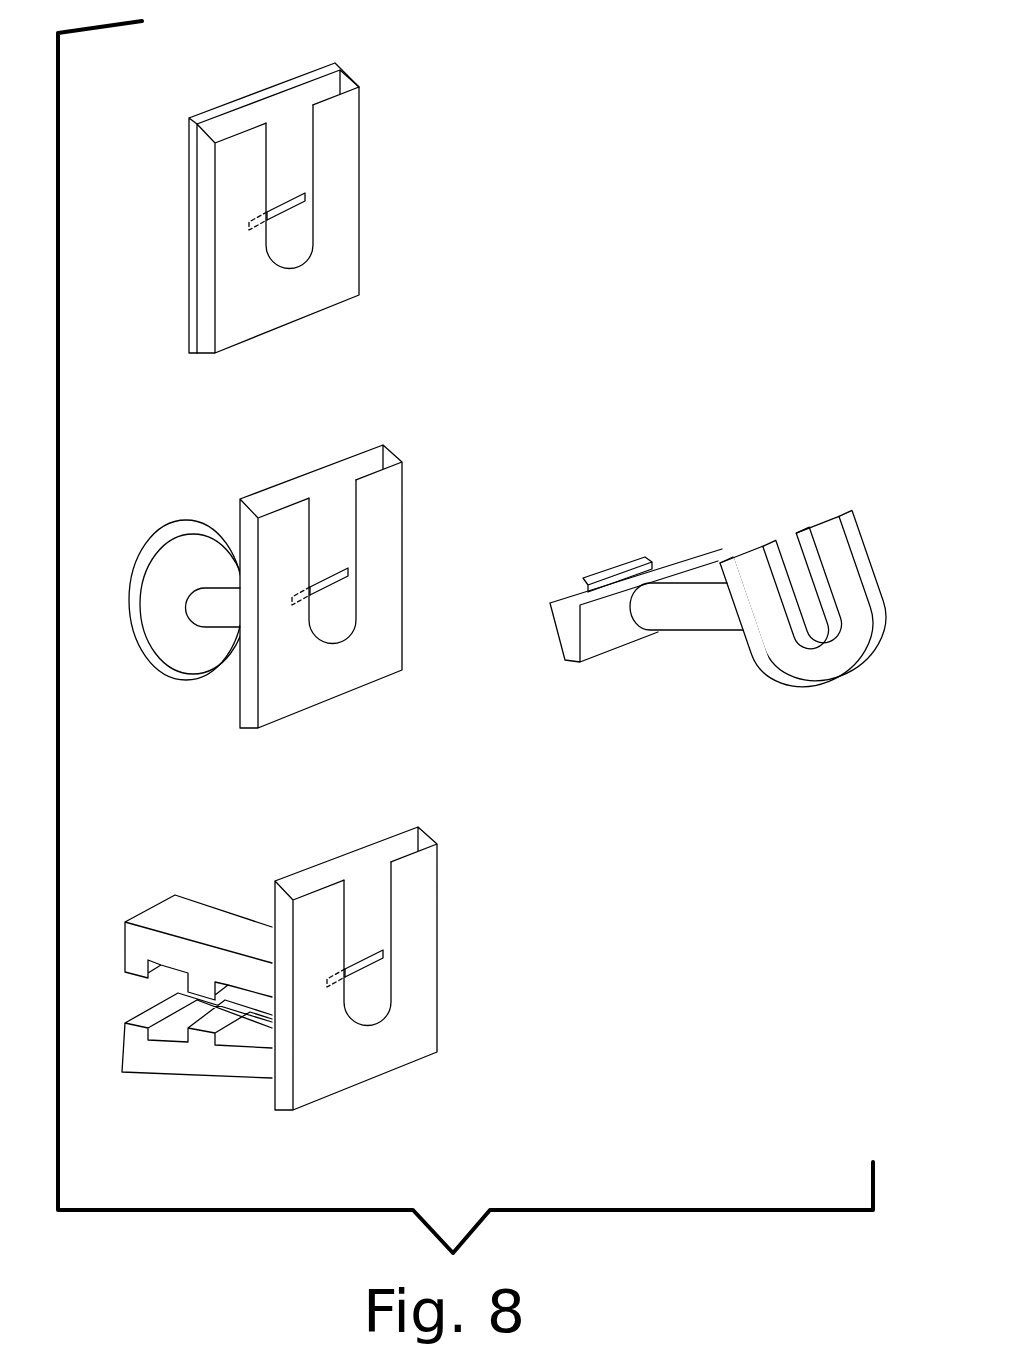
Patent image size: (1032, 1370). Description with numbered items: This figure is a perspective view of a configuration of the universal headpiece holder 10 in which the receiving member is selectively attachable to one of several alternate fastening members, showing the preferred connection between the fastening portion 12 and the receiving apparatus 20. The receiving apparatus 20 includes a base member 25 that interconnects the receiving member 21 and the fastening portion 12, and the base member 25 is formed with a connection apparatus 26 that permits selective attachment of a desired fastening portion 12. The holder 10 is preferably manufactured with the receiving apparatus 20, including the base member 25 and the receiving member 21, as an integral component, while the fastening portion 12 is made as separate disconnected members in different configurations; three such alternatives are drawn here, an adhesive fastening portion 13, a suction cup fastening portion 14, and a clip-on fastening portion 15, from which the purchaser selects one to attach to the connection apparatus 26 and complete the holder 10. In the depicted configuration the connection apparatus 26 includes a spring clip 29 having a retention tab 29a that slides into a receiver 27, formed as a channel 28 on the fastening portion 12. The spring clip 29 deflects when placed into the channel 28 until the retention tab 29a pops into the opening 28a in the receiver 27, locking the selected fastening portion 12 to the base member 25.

The holder 10 is at (639, 178).
The fastening portion 12 is at (405, 125).
The adhesive fastening portion 13 is at (192, 150).
The suction cup fastening portion 14 is at (188, 520).
The clip-on fastening portion 15 is at (163, 1060).
The receiving apparatus 20 is at (773, 462).
The receiving member 21 is at (818, 667).
The base member 25 is at (692, 622).
The connection apparatus 26 is at (577, 684).
The receiver 27 is at (358, 85).
The channel 28 is at (308, 226).
The opening 28a is at (306, 202).
The spring clip 29 is at (565, 659).
The retention tab 29a is at (620, 566).